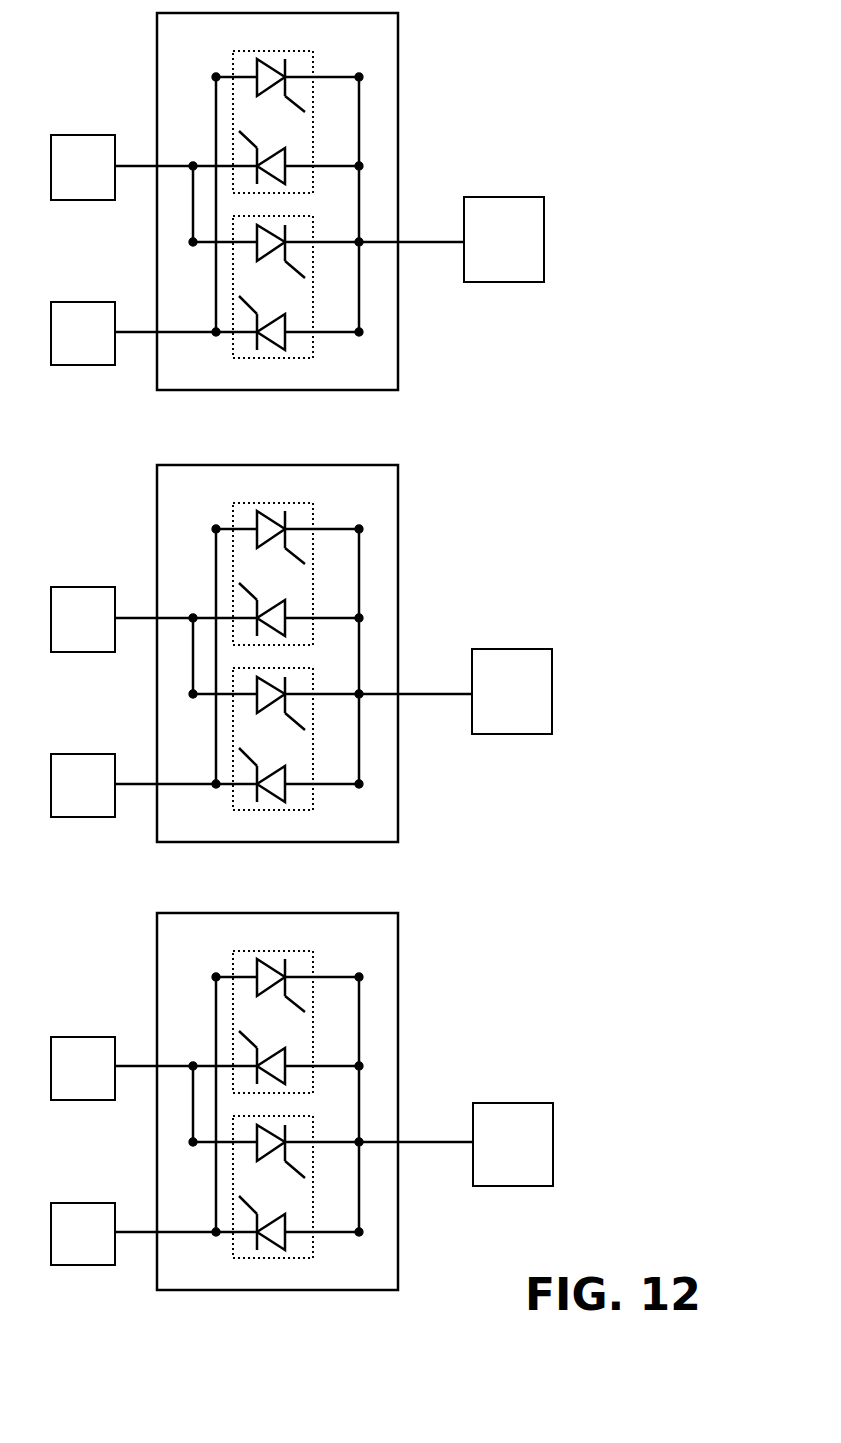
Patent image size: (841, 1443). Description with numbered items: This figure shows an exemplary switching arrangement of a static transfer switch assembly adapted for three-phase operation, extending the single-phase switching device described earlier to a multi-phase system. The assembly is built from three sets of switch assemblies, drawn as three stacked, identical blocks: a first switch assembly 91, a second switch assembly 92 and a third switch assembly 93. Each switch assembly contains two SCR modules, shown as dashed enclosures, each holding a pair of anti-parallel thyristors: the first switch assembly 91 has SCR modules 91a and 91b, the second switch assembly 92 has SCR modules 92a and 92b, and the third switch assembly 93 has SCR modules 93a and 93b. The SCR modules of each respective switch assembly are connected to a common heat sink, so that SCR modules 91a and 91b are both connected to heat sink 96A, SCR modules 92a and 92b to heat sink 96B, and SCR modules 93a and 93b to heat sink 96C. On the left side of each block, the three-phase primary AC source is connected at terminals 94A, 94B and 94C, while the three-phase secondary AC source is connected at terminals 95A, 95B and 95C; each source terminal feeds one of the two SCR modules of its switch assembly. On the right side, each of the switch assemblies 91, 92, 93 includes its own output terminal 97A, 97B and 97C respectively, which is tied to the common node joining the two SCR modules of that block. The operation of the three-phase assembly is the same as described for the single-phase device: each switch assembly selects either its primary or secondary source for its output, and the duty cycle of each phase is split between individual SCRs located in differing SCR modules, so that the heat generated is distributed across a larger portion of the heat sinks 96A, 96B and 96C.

The first switch assembly 91 is at (297, 195).
The SCR module 91a is at (311, 53).
The SCR module 91b is at (313, 218).
The second switch assembly 92 is at (301, 647).
The SCR module 92a is at (307, 566).
The SCR module 92b is at (308, 730).
The third switch assembly 93 is at (302, 1094).
The SCR module 93a is at (307, 1014).
The SCR module 93b is at (309, 1180).
The primary AC source terminal 94A is at (108, 186).
The secondary AC source terminal 95A is at (108, 351).
The heat sink 96A is at (387, 128).
The output terminal 97A is at (504, 239).
The primary AC source terminal 94B is at (83, 619).
The secondary AC source terminal 95B is at (83, 785).
The heat sink 96B is at (328, 653).
The output terminal 97B is at (512, 691).
The primary AC source terminal 94C is at (83, 1068).
The secondary AC source terminal 95C is at (83, 1234).
The heat sink 96C is at (329, 1101).
The output terminal 97C is at (513, 1144).